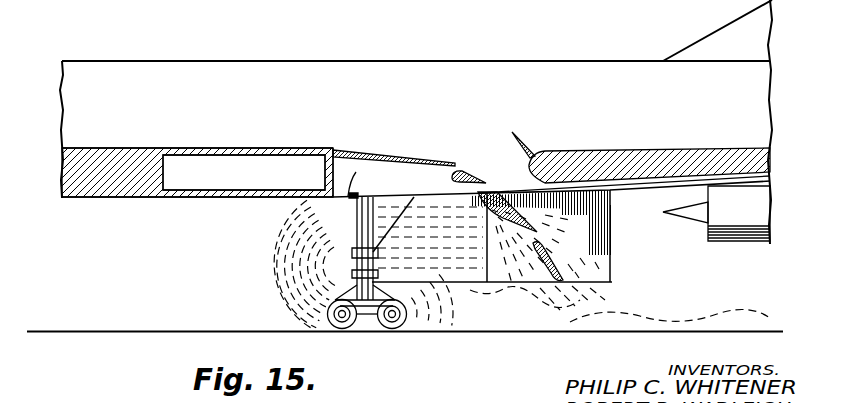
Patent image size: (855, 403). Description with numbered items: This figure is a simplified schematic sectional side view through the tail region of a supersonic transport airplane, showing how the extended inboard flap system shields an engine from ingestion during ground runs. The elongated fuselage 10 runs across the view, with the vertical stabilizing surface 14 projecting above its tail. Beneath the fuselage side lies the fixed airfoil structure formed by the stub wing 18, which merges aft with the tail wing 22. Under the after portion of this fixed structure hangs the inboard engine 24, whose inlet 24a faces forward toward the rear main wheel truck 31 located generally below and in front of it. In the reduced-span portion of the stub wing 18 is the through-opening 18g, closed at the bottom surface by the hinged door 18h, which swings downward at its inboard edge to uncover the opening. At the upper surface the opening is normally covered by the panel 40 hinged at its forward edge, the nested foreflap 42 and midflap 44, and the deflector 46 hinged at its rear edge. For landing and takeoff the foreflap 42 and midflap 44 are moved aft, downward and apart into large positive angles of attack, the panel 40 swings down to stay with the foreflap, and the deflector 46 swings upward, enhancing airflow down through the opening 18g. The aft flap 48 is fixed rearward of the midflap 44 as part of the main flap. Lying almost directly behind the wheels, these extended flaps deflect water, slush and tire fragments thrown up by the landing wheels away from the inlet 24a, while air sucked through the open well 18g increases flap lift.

The fuselage 10 is at (254, 58).
The vertical stabilizing surface 14 is at (724, 22).
The stub wing 18 is at (250, 147).
The through-opening 18g is at (350, 196).
The hinged door 18h is at (612, 282).
The tail wing 22 is at (663, 148).
The inboard engine 24 is at (751, 223).
The inboard engine inlet 24a is at (708, 228).
The rear main wheel truck 31 is at (306, 318).
The panel 40 is at (393, 152).
The foreflap 42 is at (467, 171).
The midflap 44 is at (533, 218).
The deflector 46 is at (522, 135).
The aft flap 48 is at (560, 263).